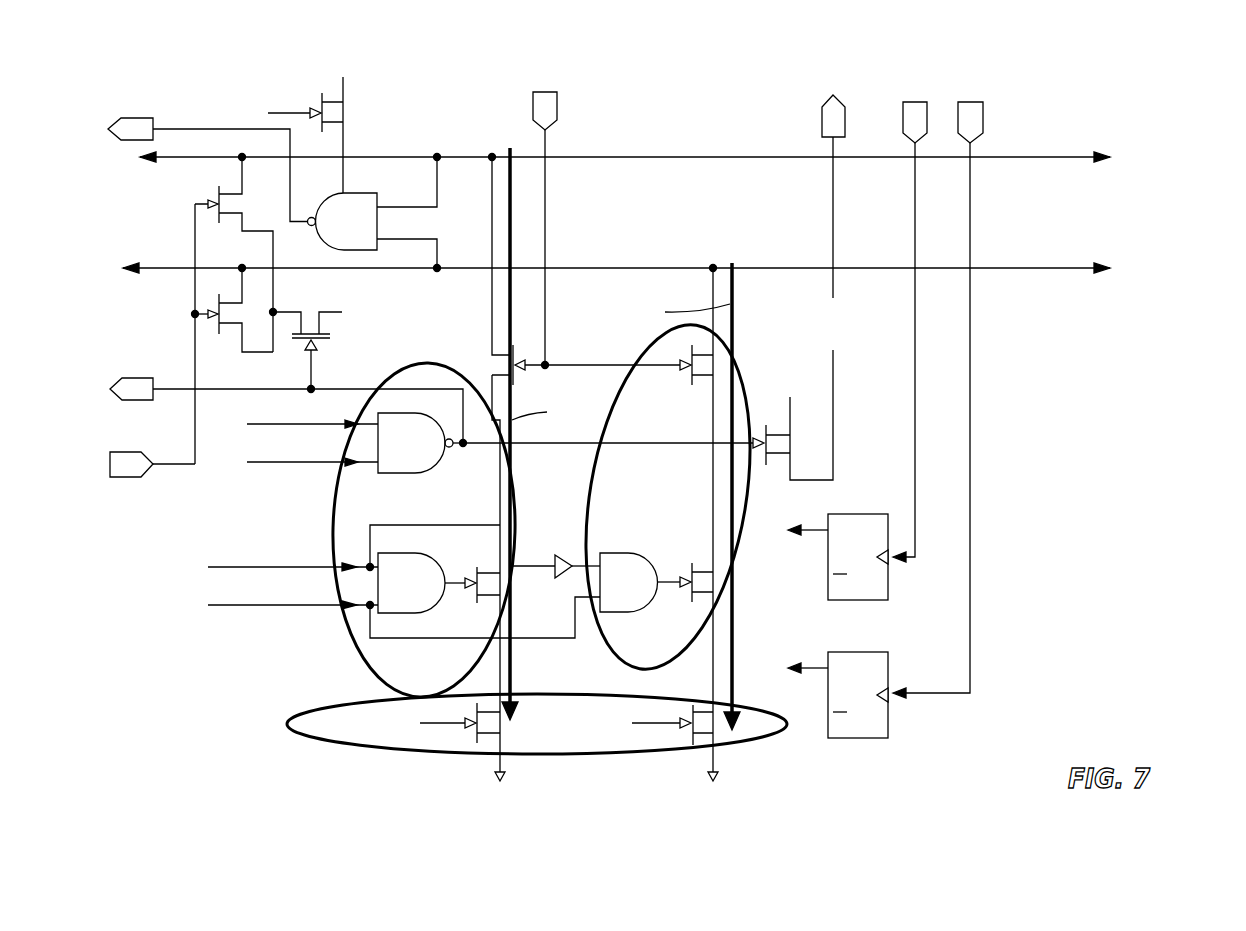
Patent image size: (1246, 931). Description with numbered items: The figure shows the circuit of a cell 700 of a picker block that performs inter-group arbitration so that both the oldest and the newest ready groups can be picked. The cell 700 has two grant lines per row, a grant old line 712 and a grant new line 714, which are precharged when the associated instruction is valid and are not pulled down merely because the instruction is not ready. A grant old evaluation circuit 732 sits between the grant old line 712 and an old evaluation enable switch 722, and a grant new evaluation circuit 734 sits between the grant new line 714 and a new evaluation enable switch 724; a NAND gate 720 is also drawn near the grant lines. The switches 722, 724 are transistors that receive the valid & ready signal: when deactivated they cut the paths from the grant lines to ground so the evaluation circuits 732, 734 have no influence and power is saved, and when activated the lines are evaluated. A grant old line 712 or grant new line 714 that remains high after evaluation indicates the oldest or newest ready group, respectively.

The cell 700 is at (668, 425).
The grant old line 712 is at (1038, 157).
The grant new line 714 is at (1040, 268).
The NAND gate 720 is at (358, 203).
The old evaluation enable switch 722 is at (480, 742).
The new evaluation enable switch 724 is at (696, 745).
The grant old evaluation circuit 732 is at (365, 660).
The grant new evaluation circuit 734 is at (602, 660).